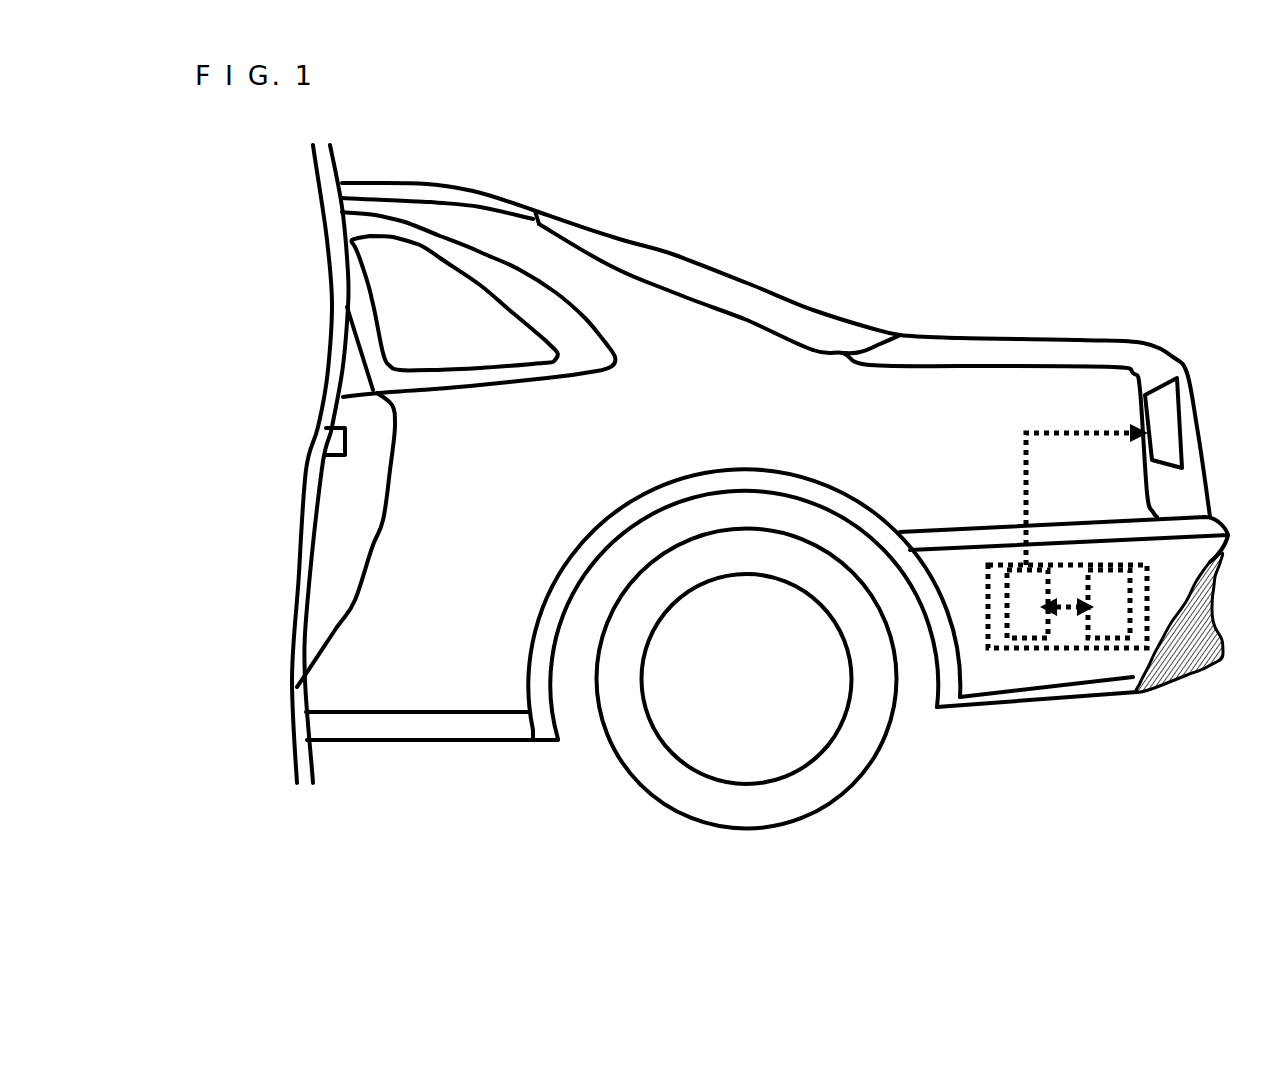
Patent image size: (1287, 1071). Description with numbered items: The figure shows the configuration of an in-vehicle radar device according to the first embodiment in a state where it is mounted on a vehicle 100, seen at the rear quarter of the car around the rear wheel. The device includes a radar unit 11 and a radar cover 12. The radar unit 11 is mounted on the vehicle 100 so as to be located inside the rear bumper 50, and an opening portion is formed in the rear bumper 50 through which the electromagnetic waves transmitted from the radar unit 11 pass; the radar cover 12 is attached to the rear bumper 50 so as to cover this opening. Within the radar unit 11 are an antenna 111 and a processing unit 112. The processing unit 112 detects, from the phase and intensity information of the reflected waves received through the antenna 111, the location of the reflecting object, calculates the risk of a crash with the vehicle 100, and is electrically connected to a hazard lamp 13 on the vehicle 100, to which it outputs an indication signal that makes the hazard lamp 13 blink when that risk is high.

The vehicle 100 is at (1018, 224).
The rear bumper 50 is at (982, 695).
The radar unit 11 is at (1065, 650).
The antenna 111 is at (1117, 652).
The processing unit 112 is at (1015, 640).
The radar cover 12 is at (1183, 682).
The hazard lamp 13 is at (1163, 383).